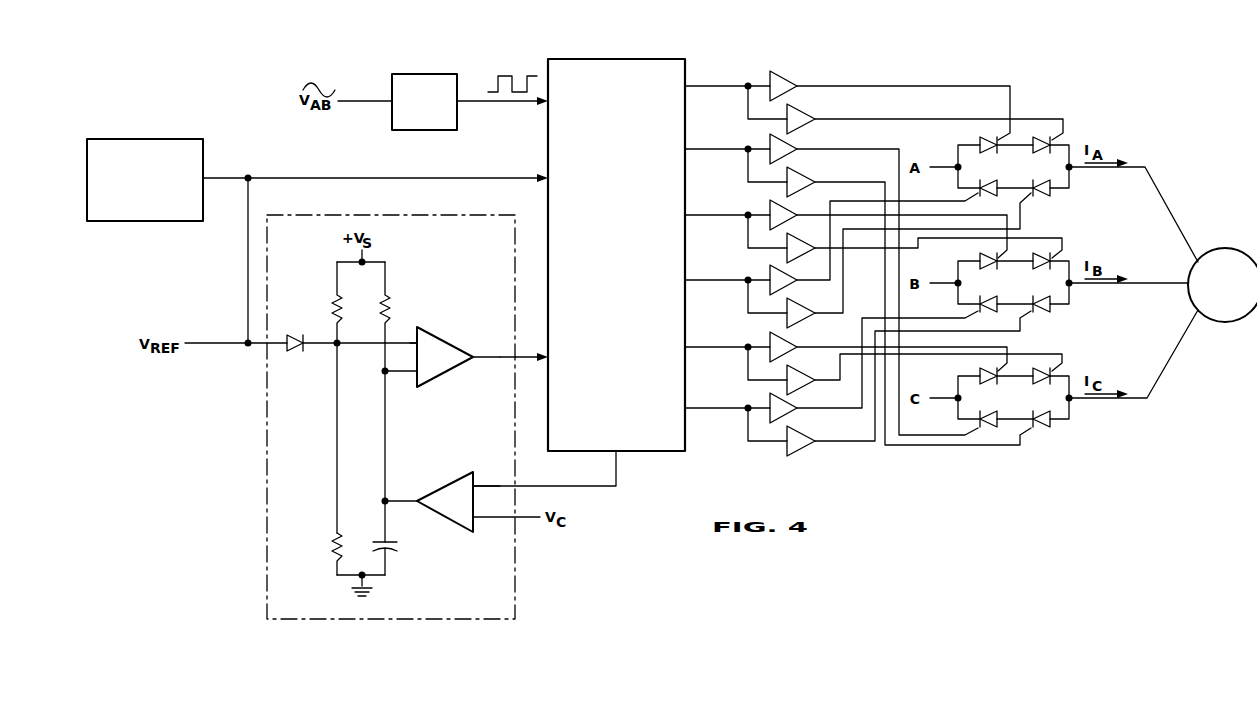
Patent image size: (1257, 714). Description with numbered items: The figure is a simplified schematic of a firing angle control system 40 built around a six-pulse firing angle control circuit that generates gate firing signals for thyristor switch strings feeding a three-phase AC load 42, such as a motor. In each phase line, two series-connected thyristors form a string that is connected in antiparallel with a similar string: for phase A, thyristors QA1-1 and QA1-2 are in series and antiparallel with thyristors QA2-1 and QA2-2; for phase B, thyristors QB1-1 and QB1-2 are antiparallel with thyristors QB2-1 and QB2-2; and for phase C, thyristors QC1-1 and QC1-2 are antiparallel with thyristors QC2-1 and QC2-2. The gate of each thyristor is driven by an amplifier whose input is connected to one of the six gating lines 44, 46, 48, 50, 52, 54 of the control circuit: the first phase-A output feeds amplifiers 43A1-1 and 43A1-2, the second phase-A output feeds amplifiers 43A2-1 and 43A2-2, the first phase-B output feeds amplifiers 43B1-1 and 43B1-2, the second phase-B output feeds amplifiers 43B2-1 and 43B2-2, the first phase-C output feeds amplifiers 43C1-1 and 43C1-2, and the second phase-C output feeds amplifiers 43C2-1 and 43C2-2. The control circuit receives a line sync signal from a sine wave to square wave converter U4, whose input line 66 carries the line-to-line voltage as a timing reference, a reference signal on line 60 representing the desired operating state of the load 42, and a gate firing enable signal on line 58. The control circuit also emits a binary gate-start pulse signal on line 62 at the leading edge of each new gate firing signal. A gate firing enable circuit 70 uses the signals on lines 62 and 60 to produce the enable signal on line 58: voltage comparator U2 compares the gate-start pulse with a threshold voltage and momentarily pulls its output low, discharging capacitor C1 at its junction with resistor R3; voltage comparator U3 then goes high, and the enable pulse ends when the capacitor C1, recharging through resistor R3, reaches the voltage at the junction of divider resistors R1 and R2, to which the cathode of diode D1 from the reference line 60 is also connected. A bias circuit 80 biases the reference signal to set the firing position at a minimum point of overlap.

The firing angle control system 40 is at (658, 46).
The three-phase AC load 42 is at (1245, 321).
The gating line 44 is at (727, 84).
The gating line 46 is at (709, 280).
The gating line 48 is at (700, 215).
The gating line 50 is at (698, 408).
The gating line 52 is at (710, 347).
The gating line 54 is at (727, 147).
The gate firing enable signal line 58 is at (525, 355).
The reference signal line 60 is at (210, 343).
The gate-start pulse signal line 62 is at (617, 460).
The input line 66 is at (362, 101).
The gate firing enable circuit 70 is at (484, 215).
The bias circuit 80 is at (171, 139).
The voltage comparator U2 is at (462, 504).
The voltage comparator U3 is at (449, 359).
The sine wave to square wave converter U4 is at (424, 102).
The resistor R1 is at (332, 313).
The resistor R2 is at (332, 552).
The resistor R3 is at (381, 311).
The capacitor C1 is at (397, 548).
The diode D1 is at (299, 335).
The amplifier 43A1-1 is at (798, 71).
The amplifier 43A1-2 is at (812, 126).
The amplifier 43A2-1 is at (770, 286).
The amplifier 43A2-2 is at (786, 323).
The amplifier 43B1-1 is at (770, 222).
The amplifier 43B1-2 is at (788, 259).
The amplifier 43B2-1 is at (770, 415).
The amplifier 43B2-2 is at (806, 450).
The amplifier 43C1-1 is at (770, 352).
The amplifier 43C1-2 is at (786, 388).
The amplifier 43C2-1 is at (800, 155).
The amplifier 43C2-2 is at (790, 196).
The thyristor QA1-1 is at (982, 139).
The thyristor QA1-2 is at (1040, 136).
The thyristor QA2-1 is at (978, 180).
The thyristor QA2-2 is at (1048, 197).
The thyristor QB1-1 is at (984, 257).
The thyristor QB1-2 is at (1042, 256).
The thyristor QB2-1 is at (978, 297).
The thyristor QB2-2 is at (1046, 309).
The thyristor QC1-1 is at (982, 373).
The thyristor QC1-2 is at (1042, 370).
The thyristor QC2-1 is at (984, 428).
The thyristor QC2-2 is at (1045, 428).